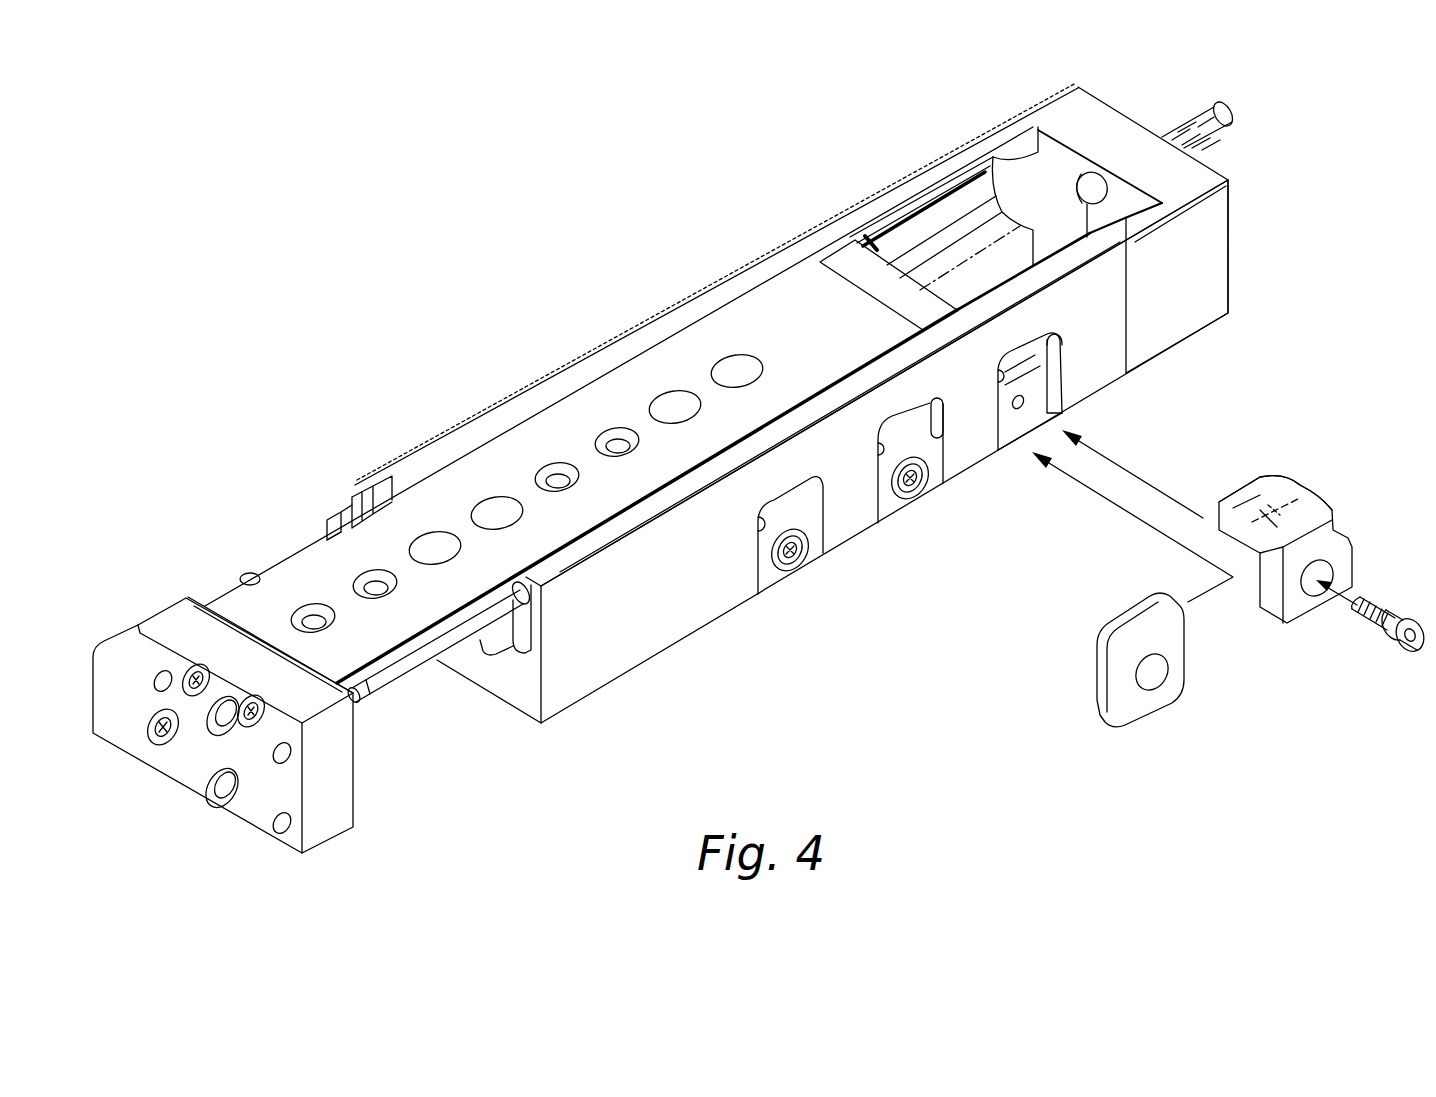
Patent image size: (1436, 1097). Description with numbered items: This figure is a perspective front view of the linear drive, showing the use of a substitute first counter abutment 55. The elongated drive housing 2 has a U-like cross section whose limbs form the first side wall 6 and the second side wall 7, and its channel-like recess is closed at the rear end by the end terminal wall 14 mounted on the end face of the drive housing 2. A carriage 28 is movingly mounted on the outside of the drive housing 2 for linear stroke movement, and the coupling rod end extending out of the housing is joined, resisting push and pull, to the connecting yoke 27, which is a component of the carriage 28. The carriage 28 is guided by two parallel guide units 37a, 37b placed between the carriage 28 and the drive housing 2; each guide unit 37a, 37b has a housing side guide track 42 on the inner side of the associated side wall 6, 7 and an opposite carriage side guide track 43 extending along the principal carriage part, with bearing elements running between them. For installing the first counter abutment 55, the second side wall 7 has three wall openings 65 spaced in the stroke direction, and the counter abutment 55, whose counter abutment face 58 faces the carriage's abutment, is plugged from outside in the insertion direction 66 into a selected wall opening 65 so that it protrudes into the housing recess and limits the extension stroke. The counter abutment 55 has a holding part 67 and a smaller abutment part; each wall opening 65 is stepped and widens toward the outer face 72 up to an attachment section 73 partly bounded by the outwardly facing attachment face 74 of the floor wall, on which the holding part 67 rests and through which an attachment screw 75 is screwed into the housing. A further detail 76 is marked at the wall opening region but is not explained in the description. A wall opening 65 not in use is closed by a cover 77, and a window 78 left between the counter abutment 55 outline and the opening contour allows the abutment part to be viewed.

The drive housing 2 is at (578, 703).
The first side wall 6 is at (683, 318).
The second side wall 7 is at (572, 466).
The end terminal wall 14 is at (1213, 248).
The connecting yoke 27 is at (328, 832).
The carriage 28 is at (340, 548).
The first guide unit 37a is at (871, 243).
The second guide unit 37b is at (960, 300).
The housing side guide track 42 is at (937, 205).
The carriage side guide track 43 is at (405, 657).
The first counter abutment 55 is at (887, 508).
The first counter abutment face 58 is at (1322, 495).
The wall opening 65 is at (757, 526).
The insertion direction 66 is at (1155, 487).
The holding part 67 is at (1300, 605).
The outer face 72 is at (653, 620).
The attachment section 73 is at (1050, 400).
The attachment face 74 is at (1003, 425).
The attachment screw 75 is at (1378, 596).
The slot 76 is at (1060, 378).
The cover 77 is at (768, 582).
The window 78 is at (944, 418).